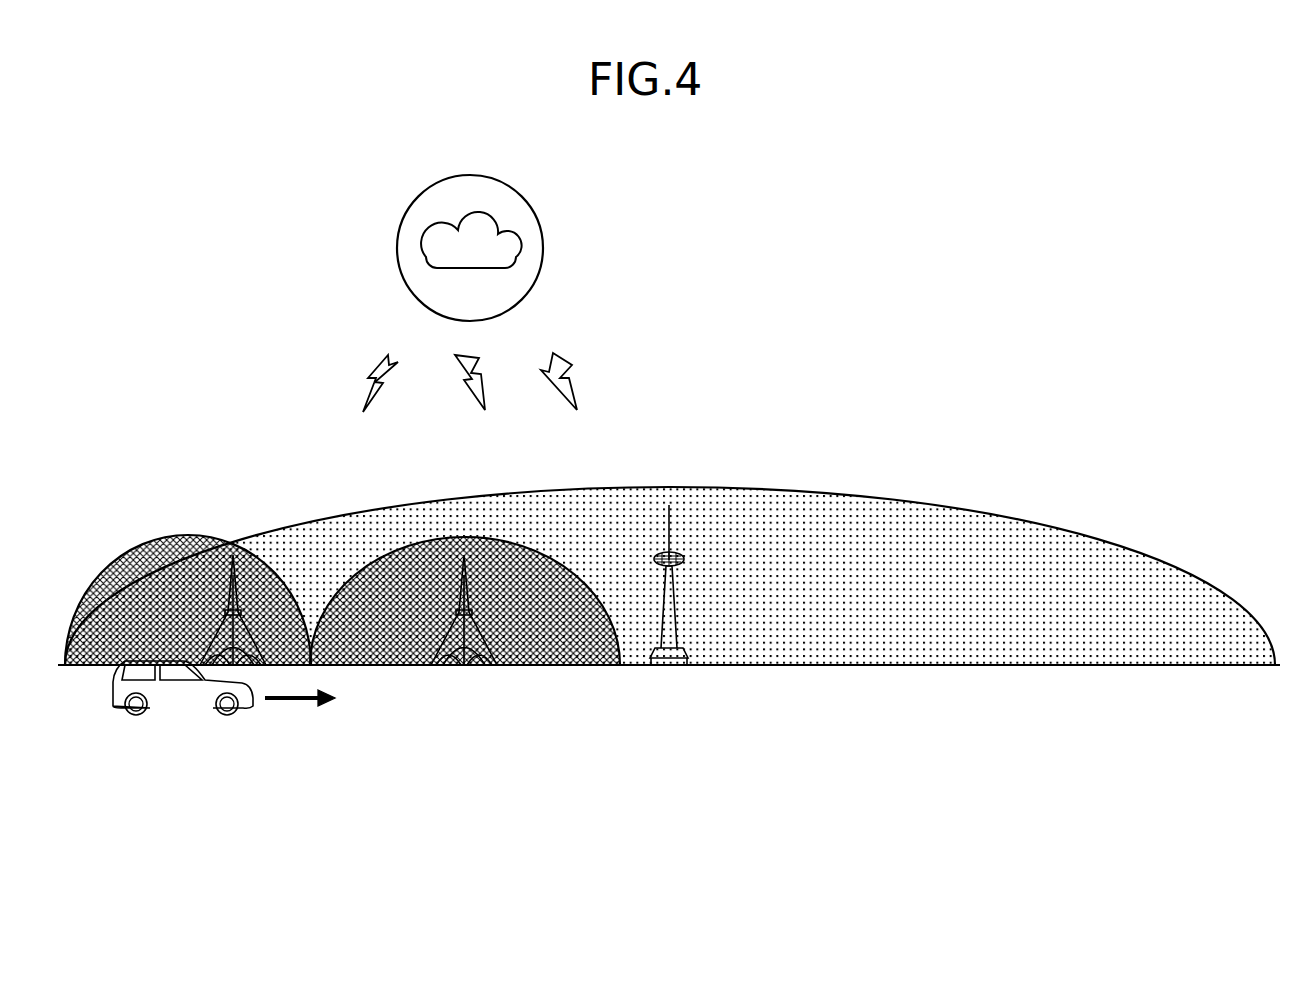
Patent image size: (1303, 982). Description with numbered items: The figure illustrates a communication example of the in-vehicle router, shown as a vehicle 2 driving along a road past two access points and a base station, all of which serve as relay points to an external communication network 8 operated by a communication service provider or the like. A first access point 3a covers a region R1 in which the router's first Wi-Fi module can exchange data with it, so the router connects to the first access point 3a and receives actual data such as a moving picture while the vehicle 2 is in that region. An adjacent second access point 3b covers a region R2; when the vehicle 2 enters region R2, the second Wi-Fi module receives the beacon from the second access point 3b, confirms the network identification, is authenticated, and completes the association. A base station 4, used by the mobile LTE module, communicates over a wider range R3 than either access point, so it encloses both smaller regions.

The vehicle 2 is at (108, 722).
The first access point 3a is at (233, 590).
The second access point 3b is at (464, 582).
The base station 4 is at (672, 536).
The external communication network 8 is at (500, 183).
The region R1 is at (167, 543).
The region R2 is at (393, 541).
The wider range R3 is at (771, 484).